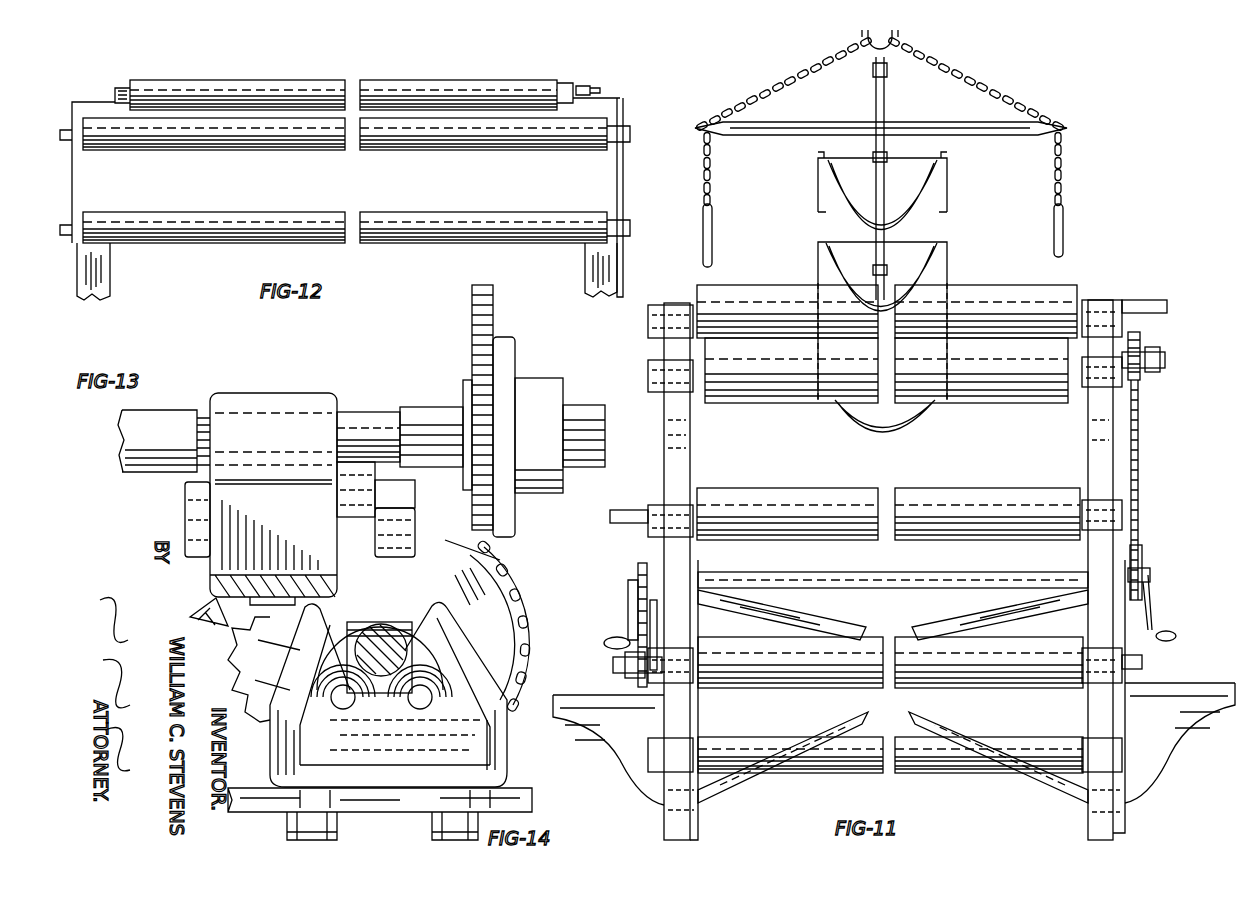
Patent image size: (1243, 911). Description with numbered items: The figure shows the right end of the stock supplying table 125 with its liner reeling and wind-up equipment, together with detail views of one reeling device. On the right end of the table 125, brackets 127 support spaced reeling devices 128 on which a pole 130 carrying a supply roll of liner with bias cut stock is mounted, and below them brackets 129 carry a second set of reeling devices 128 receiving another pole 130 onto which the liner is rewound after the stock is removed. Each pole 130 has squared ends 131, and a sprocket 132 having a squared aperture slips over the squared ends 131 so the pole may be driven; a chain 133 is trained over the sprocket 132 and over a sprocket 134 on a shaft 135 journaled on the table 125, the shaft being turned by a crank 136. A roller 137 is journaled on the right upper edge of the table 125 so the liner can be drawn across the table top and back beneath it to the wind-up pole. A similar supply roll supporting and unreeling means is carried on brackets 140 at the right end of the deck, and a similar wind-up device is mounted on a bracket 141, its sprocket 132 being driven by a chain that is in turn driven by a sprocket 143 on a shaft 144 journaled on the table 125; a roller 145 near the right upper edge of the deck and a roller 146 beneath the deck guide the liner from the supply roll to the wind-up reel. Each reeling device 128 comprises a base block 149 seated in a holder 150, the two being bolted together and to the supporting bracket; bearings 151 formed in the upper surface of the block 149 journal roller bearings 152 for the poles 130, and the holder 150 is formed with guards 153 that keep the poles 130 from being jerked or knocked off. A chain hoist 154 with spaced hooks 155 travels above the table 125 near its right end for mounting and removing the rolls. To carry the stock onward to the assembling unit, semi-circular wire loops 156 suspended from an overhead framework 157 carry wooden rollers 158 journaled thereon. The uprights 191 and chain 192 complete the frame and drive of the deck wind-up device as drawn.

In FIG. 12, the table 125 is at (104, 277).
In FIG. 11, the table 125 is at (668, 815).
In FIG. 11, the brackets 127 is at (690, 632).
In FIG. 11, the reeling devices 128 is at (998, 300).
In FIG. 11, the brackets 129 is at (682, 742).
In FIG. 13, the pole 130 is at (378, 425).
In FIG. 14, the pole 130 is at (383, 638).
In FIG. 11, the pole 130 is at (948, 518).
In FIG. 13, the squared ends 131 is at (432, 418).
In FIG. 14, the squared ends 131 is at (410, 625).
In FIG. 11, the squared ends 131 is at (626, 516).
In FIG. 13, the sprocket 132 is at (504, 350).
In FIG. 14, the sprocket 132 is at (498, 578).
In FIG. 11, the sprocket 132 is at (1143, 373).
In FIG. 13, the chain 133 is at (474, 312).
In FIG. 11, the chain 133 is at (638, 622).
In FIG. 11, the sprocket 134 is at (641, 571).
In FIG. 11, the shaft 135 is at (1016, 567).
In FIG. 11, the crank 136 is at (628, 598).
In FIG. 12, the roller 137 is at (433, 215).
In FIG. 11, the roller 137 is at (770, 510).
In FIG. 11, the brackets 140 is at (672, 322).
In FIG. 11, the bracket 141 is at (679, 450).
In FIG. 11, the sprocket 143 is at (1144, 568).
In FIG. 11, the shaft 144 is at (1150, 576).
In FIG. 12, the roller 145 is at (477, 86).
In FIG. 11, the roller 145 is at (778, 396).
In FIG. 12, the roller 146 is at (512, 130).
In FIG. 13, the base block 149 is at (409, 536).
In FIG. 14, the base block 149 is at (280, 740).
In FIG. 13, the holder 150 is at (216, 566).
In FIG. 14, the holder 150 is at (505, 760).
In FIG. 13, the bearings 151 is at (185, 491).
In FIG. 14, the bearings 151 is at (333, 712).
In FIG. 13, the roller bearings 152 is at (355, 520).
In FIG. 14, the roller bearings 152 is at (300, 680).
In FIG. 13, the guards 153 is at (302, 405).
In FIG. 14, the guards 153 is at (300, 620).
In FIG. 11, the chain hoist 154 is at (963, 128).
In FIG. 11, the hooks 155 is at (712, 235).
In FIG. 11, the semi-circular wire loops 156 is at (950, 171).
In FIG. 11, the overhead framework 157 is at (873, 66).
In FIG. 11, the wooden rollers 158 is at (845, 216).
In FIG. 11, the upright 191 is at (1096, 438).
In FIG. 11, the chain 192 is at (1143, 470).